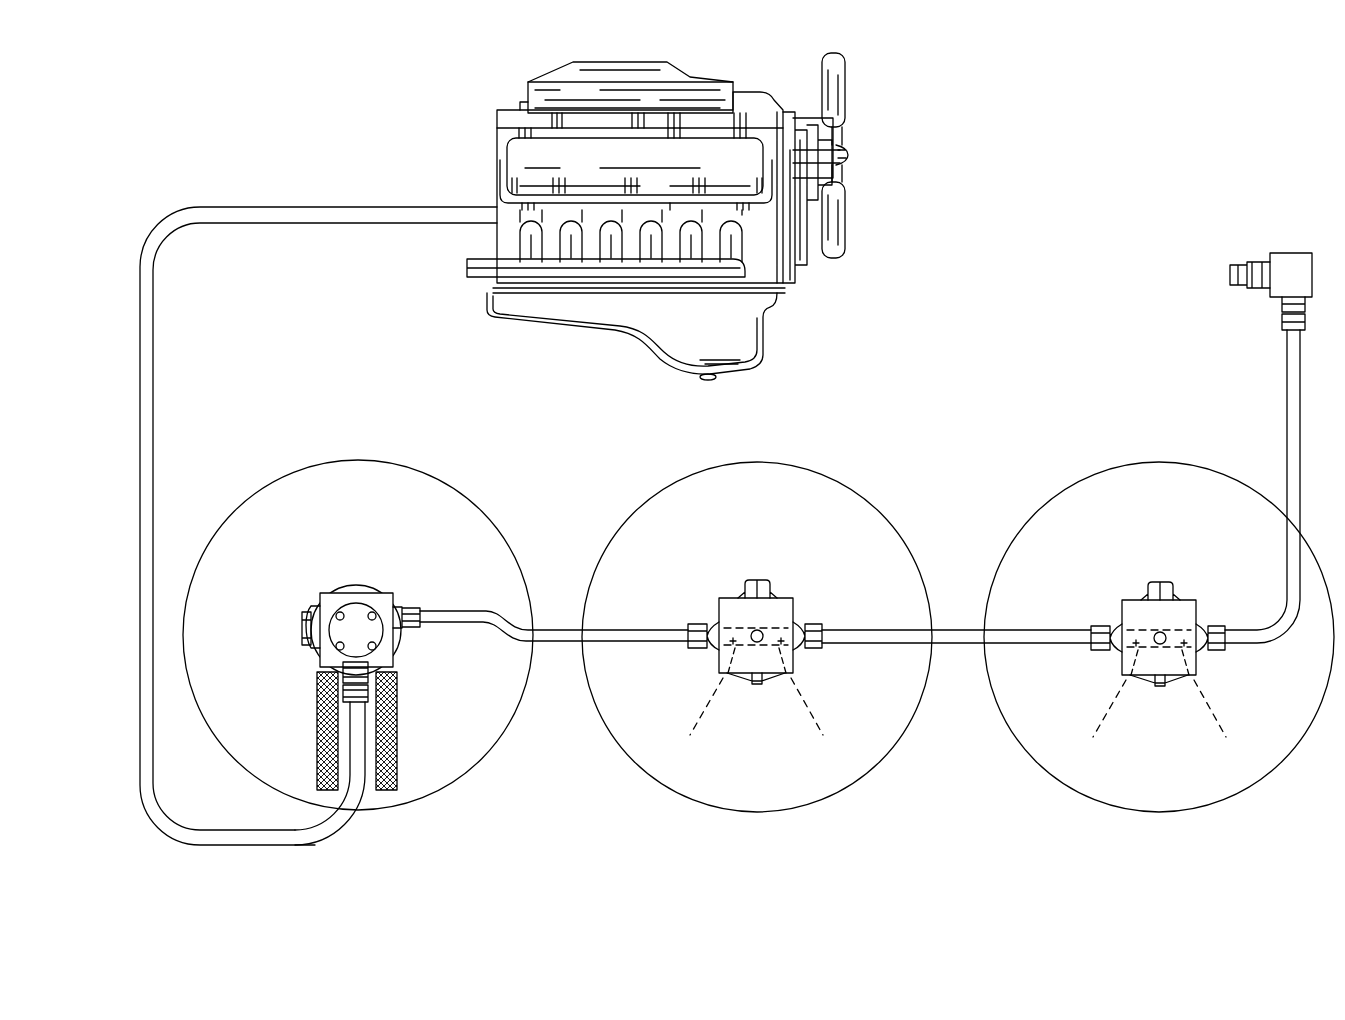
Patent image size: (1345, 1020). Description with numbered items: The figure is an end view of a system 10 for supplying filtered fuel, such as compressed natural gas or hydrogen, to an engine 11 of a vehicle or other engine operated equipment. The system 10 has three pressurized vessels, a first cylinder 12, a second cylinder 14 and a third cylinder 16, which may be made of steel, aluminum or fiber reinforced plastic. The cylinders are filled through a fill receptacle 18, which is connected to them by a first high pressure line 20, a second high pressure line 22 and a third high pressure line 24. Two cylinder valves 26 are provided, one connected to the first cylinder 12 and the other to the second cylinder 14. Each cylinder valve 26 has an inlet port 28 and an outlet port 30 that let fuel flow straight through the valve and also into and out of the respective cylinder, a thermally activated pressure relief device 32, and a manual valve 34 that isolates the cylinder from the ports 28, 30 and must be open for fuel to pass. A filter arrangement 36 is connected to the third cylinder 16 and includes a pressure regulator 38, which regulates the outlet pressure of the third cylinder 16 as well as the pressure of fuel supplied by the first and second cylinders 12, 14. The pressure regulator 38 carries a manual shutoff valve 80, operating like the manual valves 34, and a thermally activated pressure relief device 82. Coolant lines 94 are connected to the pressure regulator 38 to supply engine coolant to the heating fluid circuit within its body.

The system 10 is at (1058, 226).
The engine 11 is at (496, 118).
The first cylinder 12 is at (1158, 462).
The second cylinder 14 is at (762, 463).
The third cylinder 16 is at (358, 459).
The fill receptacle 18 is at (1230, 276).
The first high pressure line 20 is at (1287, 406).
The second high pressure line 22 is at (961, 630).
The third high pressure line 24 is at (563, 630).
The cylinder valve 26 is at (800, 600).
The inlet port 28 is at (1020, 722).
The outlet port 30 is at (894, 719).
The thermally activated pressure relief device 32 is at (757, 579).
The manual valve 34 is at (755, 684).
The filter arrangement 36 is at (393, 591).
The pressure regulator 38 is at (358, 590).
The manual shutoff valve 80 is at (304, 618).
The thermally activated pressure relief device 82 is at (312, 608).
The coolant lines 94 is at (158, 366).